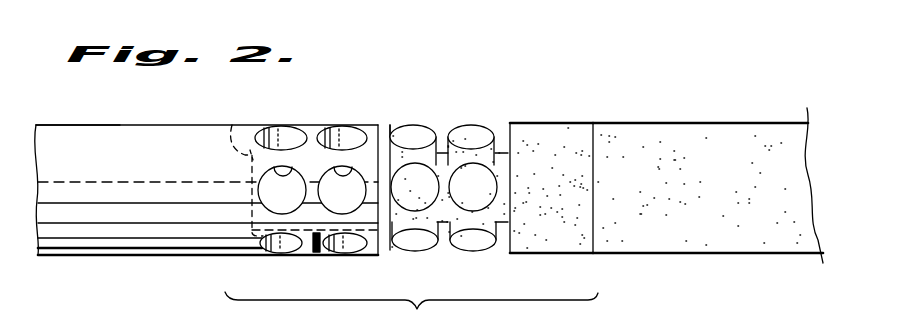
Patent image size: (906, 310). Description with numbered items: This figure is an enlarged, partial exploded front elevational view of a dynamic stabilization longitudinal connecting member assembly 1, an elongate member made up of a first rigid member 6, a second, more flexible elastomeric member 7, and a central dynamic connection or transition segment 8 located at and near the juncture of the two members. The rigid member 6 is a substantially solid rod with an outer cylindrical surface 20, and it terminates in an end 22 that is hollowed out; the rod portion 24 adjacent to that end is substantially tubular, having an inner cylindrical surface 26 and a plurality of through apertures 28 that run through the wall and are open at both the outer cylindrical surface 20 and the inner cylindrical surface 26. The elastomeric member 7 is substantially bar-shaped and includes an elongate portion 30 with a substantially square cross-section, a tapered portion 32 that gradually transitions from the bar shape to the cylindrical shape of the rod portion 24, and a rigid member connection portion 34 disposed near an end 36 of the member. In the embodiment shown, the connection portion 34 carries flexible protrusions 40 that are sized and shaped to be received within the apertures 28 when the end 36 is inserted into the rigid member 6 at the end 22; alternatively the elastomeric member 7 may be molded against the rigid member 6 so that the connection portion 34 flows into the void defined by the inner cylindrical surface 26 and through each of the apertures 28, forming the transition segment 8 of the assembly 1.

The dynamic stabilization longitudinal connecting member assembly 1 is at (563, 82).
The first rigid member 6 is at (116, 126).
The second elastomeric member 7 is at (668, 122).
The transition segment 8 is at (381, 111).
The outer cylindrical surface 20 is at (149, 167).
The end 22 is at (380, 250).
The rod portion 24 is at (308, 125).
The inner cylindrical surface 26 is at (246, 115).
The through apertures 28 is at (280, 176).
The elongate portion 30 is at (618, 130).
The tapered portion 32 is at (570, 126).
The rigid member connection portion 34 is at (443, 117).
The end 36 is at (388, 231).
The flexible protrusions 40 is at (418, 130).